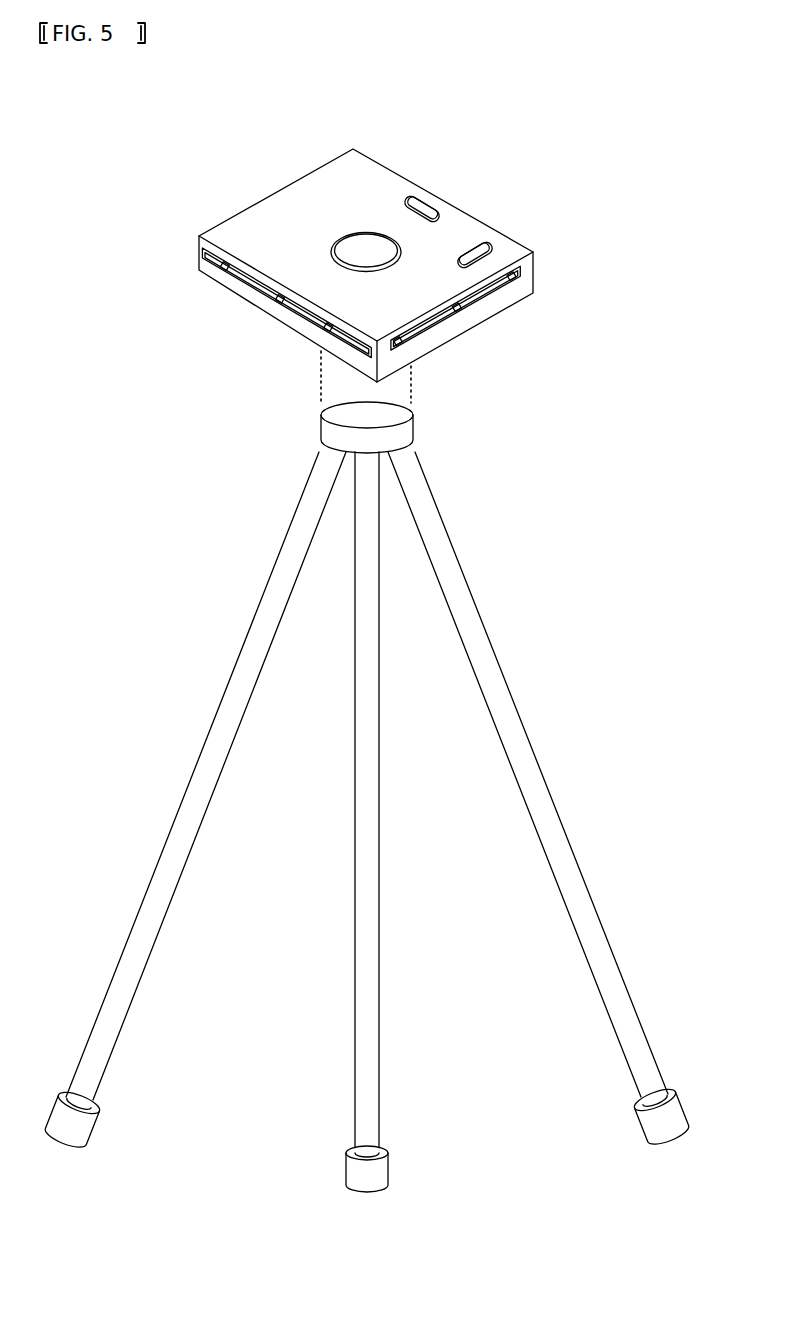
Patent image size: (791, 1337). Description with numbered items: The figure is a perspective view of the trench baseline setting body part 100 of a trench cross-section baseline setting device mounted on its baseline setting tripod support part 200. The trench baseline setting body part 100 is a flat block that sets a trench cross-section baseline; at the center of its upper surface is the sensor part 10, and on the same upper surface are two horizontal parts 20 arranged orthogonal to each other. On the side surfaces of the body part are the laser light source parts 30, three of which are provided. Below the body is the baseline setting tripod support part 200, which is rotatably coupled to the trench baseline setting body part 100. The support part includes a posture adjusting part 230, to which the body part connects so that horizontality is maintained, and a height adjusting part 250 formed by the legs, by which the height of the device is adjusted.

The trench baseline setting body part 100 is at (412, 178).
The sensor part 10 is at (343, 232).
The horizontal parts 20 is at (440, 208).
The laser light source parts 30 is at (223, 266).
The baseline setting tripod support part 200 is at (359, 797).
The posture adjusting part 230 is at (335, 438).
The height adjusting part 250 is at (262, 628).